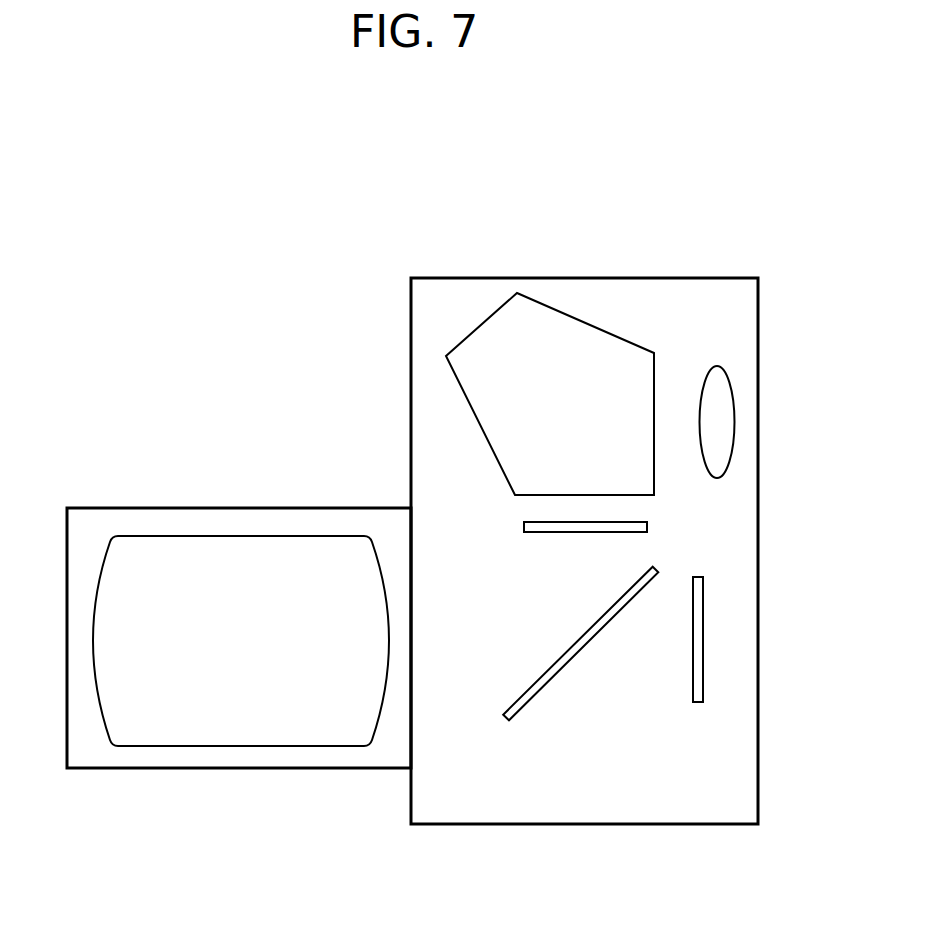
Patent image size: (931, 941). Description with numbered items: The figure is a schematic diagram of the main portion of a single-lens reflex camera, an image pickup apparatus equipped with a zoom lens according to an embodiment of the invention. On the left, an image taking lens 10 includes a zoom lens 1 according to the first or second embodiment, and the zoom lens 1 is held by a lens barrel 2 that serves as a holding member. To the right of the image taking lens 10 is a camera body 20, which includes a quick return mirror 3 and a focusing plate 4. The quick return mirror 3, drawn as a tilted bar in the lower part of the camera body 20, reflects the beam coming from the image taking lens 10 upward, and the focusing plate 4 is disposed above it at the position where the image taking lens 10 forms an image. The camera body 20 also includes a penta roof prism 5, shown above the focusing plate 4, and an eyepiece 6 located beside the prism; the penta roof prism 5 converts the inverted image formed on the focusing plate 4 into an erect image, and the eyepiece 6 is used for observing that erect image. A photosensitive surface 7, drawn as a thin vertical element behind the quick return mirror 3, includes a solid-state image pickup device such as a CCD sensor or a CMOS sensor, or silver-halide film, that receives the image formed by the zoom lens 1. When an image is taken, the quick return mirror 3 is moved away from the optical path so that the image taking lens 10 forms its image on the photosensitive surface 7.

The zoom lens 1 is at (223, 548).
The lens barrel 2 is at (242, 768).
The quick return mirror 3 is at (552, 677).
The focusing plate 4 is at (547, 527).
The penta roof prism 5 is at (500, 325).
The eyepiece 6 is at (727, 417).
The photosensitive surface 7 is at (698, 638).
The image taking lens 10 is at (239, 618).
The camera body 20 is at (615, 509).